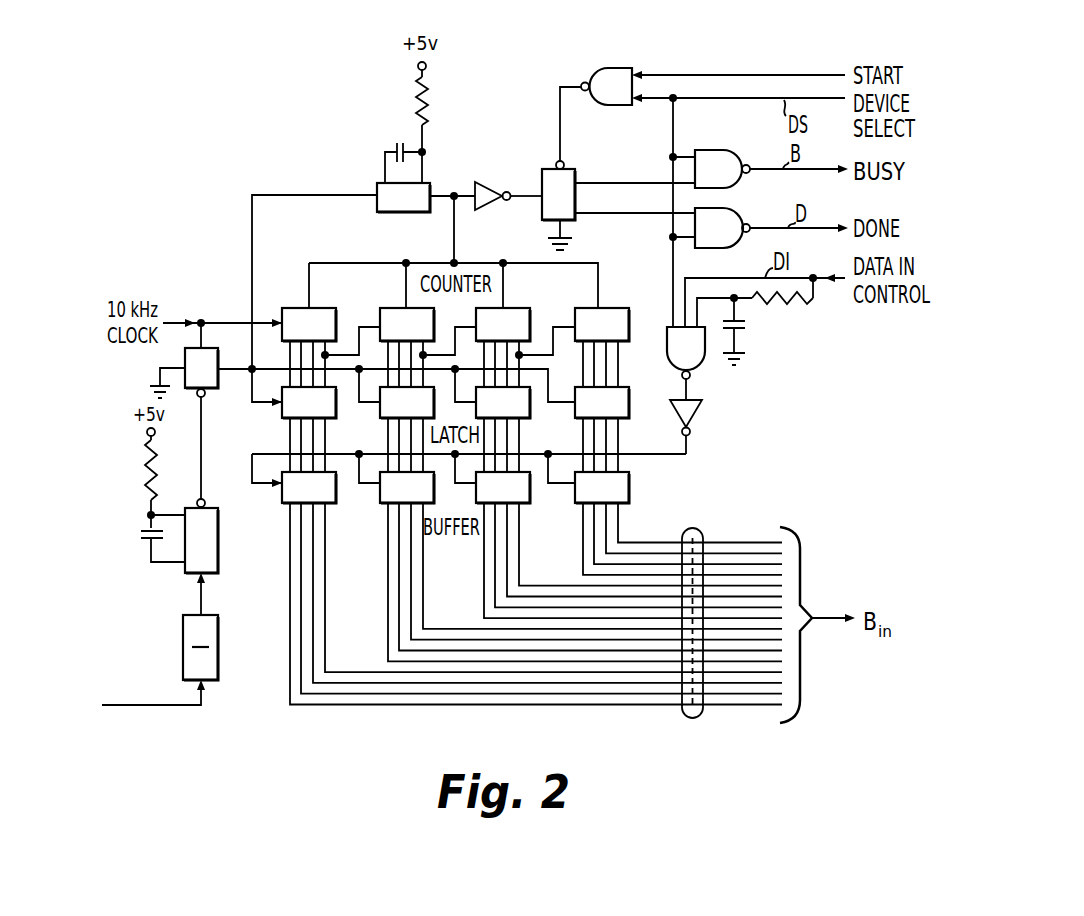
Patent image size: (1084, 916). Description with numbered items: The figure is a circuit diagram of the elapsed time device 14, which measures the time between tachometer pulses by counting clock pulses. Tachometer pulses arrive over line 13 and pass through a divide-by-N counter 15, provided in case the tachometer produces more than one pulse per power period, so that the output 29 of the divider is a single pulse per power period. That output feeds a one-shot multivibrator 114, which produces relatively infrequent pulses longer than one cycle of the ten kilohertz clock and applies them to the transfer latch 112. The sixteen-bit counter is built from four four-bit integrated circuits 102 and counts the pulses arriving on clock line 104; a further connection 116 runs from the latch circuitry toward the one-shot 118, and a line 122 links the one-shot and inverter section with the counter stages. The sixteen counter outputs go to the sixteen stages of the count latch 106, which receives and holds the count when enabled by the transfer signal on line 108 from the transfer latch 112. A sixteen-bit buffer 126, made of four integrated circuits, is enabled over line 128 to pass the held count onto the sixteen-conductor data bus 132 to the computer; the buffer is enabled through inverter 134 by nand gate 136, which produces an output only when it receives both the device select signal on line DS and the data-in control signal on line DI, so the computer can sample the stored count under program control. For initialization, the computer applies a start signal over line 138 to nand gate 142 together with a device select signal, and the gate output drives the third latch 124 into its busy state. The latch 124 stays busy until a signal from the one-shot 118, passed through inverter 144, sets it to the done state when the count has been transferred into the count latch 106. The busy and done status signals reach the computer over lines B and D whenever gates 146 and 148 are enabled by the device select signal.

The line 13 is at (165, 705).
The elapsed time device 14 is at (849, 503).
The divide-by-N counter 15 is at (218, 655).
The output line 29 is at (203, 606).
The 4-bit integrated circuits 102 is at (455, 325).
The clock line 104 is at (175, 318).
The count latch 106 is at (455, 403).
The transfer signal line 108 is at (237, 375).
The transfer latch 112 is at (212, 392).
The one-shot multivibrator 114 is at (218, 552).
The timer trigger line 116 is at (253, 239).
The one-shot 118 is at (426, 138).
The counter reset line 122 is at (457, 233).
The third latch 124 is at (576, 172).
The 16-bit buffer 126 is at (455, 488).
The enable line 128 is at (688, 447).
The 16-conductor data bus 132 is at (700, 530).
The inverter 134 is at (700, 411).
The nand gate 136 is at (667, 356).
The start line 138 is at (724, 73).
The nand gate 142 is at (608, 68).
The inverter 144 is at (487, 178).
The gate 146 is at (722, 150).
The gate 148 is at (728, 211).